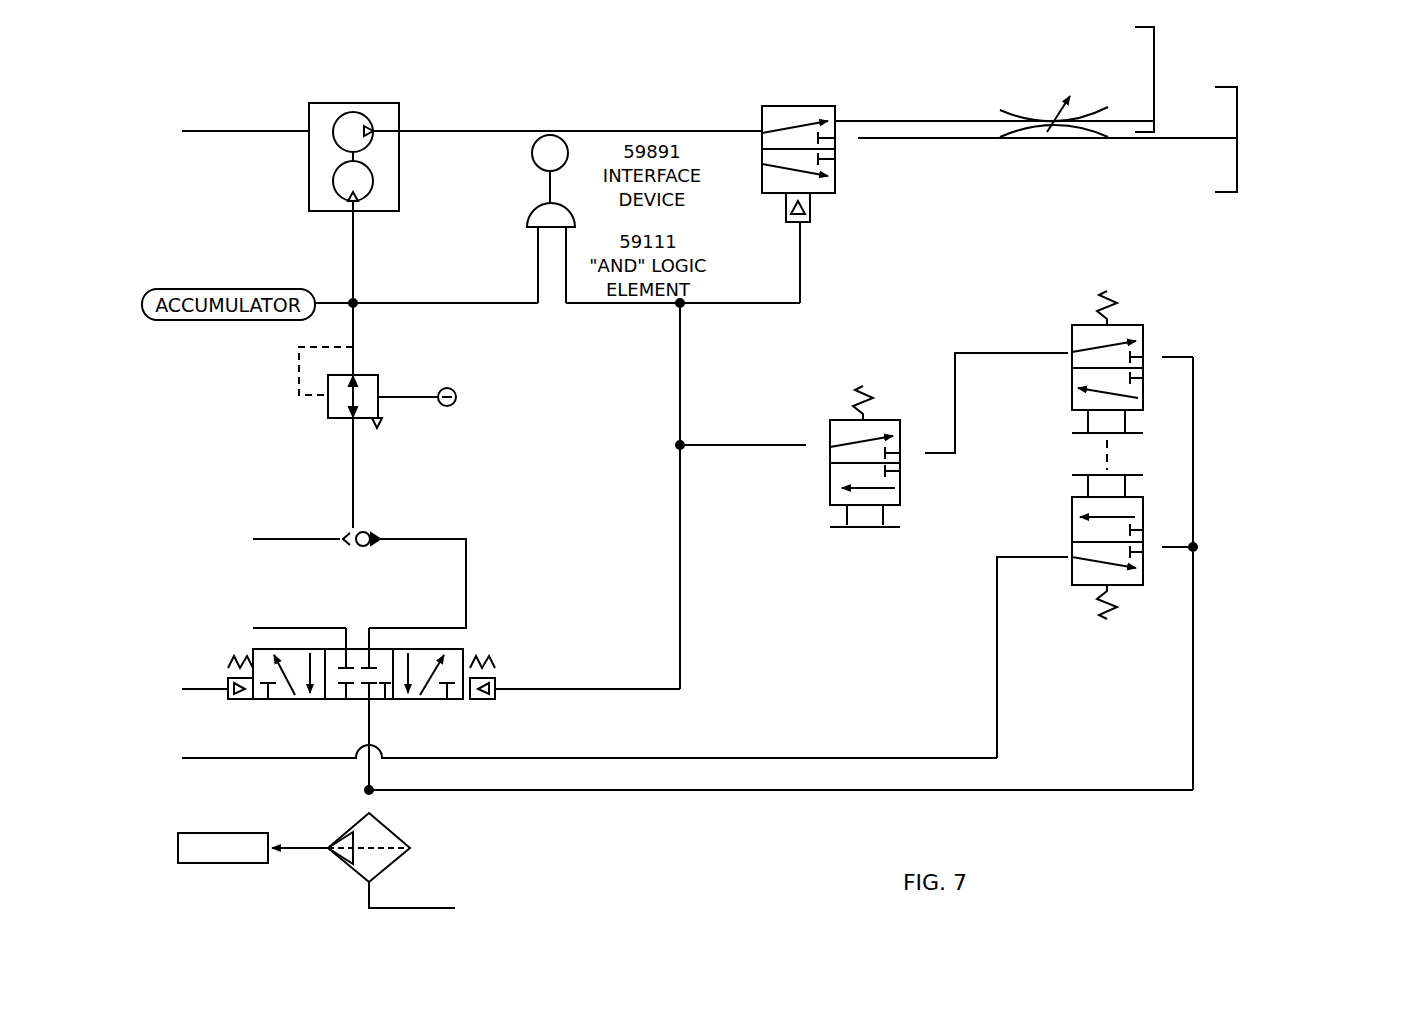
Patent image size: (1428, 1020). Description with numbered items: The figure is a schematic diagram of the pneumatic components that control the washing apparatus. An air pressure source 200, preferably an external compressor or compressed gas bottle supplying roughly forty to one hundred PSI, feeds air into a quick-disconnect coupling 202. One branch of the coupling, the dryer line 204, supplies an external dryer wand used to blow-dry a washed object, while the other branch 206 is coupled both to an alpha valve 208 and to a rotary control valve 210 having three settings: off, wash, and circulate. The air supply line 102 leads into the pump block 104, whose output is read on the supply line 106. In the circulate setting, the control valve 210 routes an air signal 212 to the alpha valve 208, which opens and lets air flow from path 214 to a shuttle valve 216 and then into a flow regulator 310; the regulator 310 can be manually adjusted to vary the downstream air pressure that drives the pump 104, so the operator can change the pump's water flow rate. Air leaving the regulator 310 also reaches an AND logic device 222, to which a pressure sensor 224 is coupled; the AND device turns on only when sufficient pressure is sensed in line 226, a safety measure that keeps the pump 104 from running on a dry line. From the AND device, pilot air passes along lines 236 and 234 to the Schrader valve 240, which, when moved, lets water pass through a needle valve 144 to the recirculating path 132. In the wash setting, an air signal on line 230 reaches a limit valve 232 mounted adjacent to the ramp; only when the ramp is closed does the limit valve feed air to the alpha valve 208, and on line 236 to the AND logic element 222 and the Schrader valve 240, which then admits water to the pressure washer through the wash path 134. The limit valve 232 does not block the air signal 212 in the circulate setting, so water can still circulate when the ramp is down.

The air supply line 102 is at (243, 128).
The pump 104 is at (309, 172).
The pressure gauge 106 is at (618, 131).
The needle valve 144 is at (1022, 109).
The recirculating path 132 is at (1154, 88).
The wash path 134 is at (1237, 127).
The pressure sensor 224 is at (535, 162).
The AND logic device 222 is at (532, 215).
The line 226 is at (598, 305).
The Schrader valve 240 is at (836, 162).
The flow regulator 310 is at (378, 380).
The shuttle valve 216 is at (368, 530).
The alpha valve 208 is at (328, 701).
The path 214 is at (369, 734).
The branch 206 is at (368, 800).
The quick-disconnect coupling 202 is at (390, 829).
The dryer line 204 is at (295, 849).
The air pressure source 200 is at (427, 908).
The line 236 is at (680, 363).
The pilot line 234 is at (680, 549).
The limit valve 232 is at (830, 425).
The line 230 is at (953, 371).
The rotary control valve 210 is at (1085, 453).
The air signal 212 is at (1021, 557).